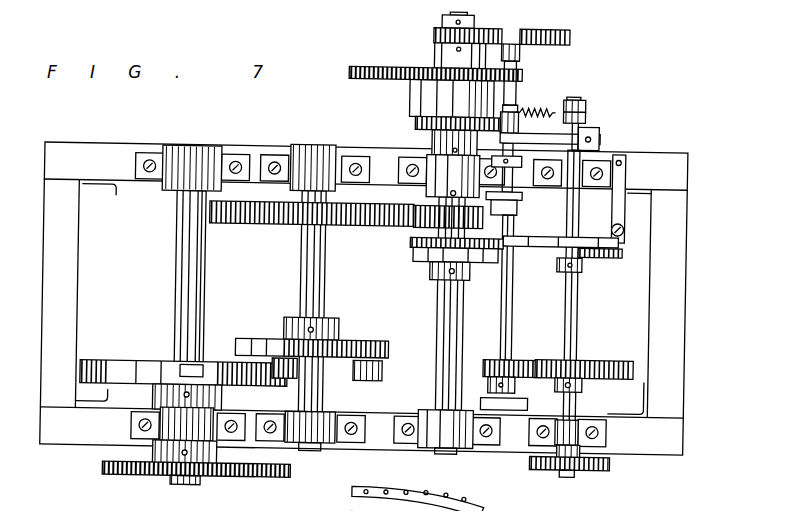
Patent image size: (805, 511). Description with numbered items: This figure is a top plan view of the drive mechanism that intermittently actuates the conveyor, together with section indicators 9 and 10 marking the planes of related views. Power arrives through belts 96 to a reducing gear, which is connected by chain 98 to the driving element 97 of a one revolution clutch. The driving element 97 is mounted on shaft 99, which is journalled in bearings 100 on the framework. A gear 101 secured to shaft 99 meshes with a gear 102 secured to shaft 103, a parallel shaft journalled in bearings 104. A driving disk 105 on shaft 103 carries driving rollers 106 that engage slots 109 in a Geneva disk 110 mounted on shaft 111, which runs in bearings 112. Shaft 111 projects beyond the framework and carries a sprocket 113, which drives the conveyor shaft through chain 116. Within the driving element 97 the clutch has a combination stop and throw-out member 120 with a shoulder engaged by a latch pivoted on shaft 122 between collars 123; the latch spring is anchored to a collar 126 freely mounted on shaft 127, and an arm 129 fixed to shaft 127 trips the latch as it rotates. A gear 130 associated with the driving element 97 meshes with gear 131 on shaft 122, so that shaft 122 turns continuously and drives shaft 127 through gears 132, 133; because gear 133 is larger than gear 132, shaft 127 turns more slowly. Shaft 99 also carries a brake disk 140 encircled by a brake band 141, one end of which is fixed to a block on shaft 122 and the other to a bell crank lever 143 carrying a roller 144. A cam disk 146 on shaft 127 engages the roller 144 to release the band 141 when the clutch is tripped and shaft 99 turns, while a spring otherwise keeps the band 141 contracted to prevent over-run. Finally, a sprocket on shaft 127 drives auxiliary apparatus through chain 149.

The section line 9- 9 is at (375, 138).
The section line 10- 10 is at (417, 307).
The belts 96 is at (378, 444).
The driving element 97 is at (418, 94).
The chain 98 is at (362, 60).
The shaft 99 is at (440, 290).
The bearings 100 is at (442, 160).
The gear 101 is at (426, 223).
The gear 102 is at (311, 231).
The shaft 103 is at (302, 270).
The bearings 104 is at (300, 150).
The driving disk 105 is at (262, 335).
The driving rollers 106 is at (372, 376).
The slots 109 is at (107, 360).
The Geneva disk 110 is at (133, 368).
The shaft 111 is at (178, 270).
The bearings 112 is at (183, 150).
The sprocket 113 is at (212, 478).
The chain 116 is at (107, 473).
The combination stop and throw-out member 120 is at (452, 498).
The shaft 122 is at (511, 314).
The collars 123 is at (519, 92).
The collar 126 is at (586, 105).
The shaft 127 is at (574, 91).
The arm 129 is at (592, 120).
The gear 130 is at (440, 27).
The gear 131 is at (568, 33).
The gear 132 is at (460, 320).
The gear 133 is at (617, 355).
The brake disk 140 is at (458, 268).
The brake band 141 is at (413, 246).
The bell crank lever 143 is at (526, 226).
The roller 144 is at (586, 250).
The cam disk 146 is at (558, 256).
The chain 149 is at (597, 461).